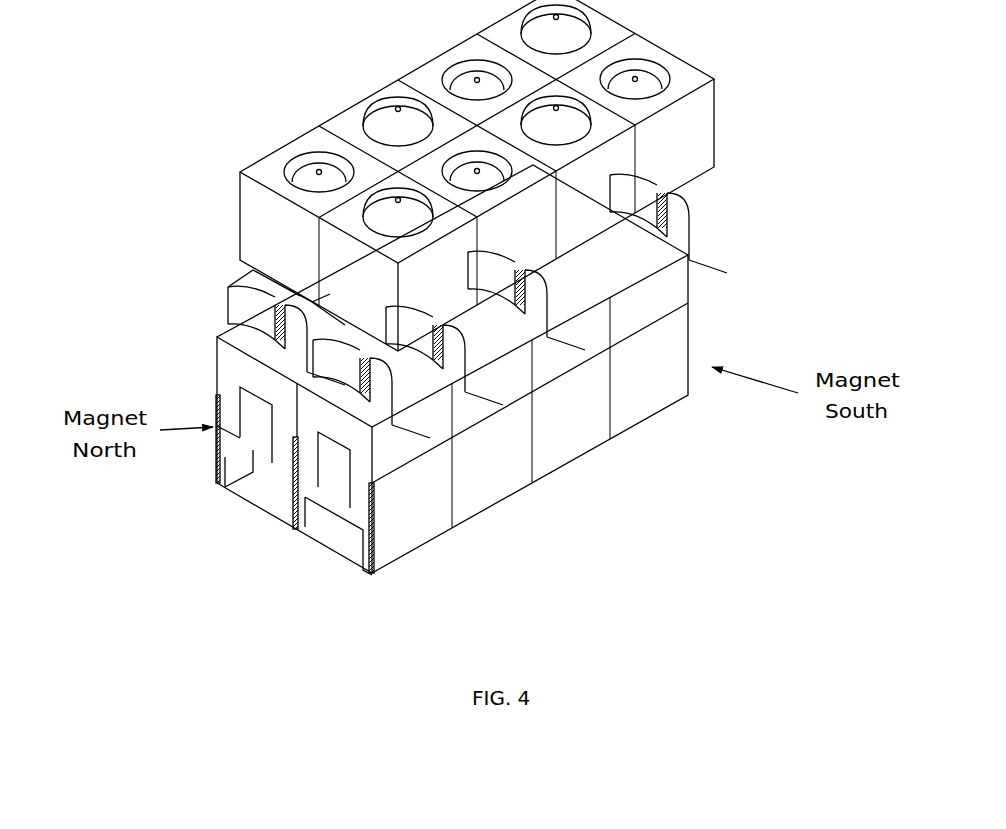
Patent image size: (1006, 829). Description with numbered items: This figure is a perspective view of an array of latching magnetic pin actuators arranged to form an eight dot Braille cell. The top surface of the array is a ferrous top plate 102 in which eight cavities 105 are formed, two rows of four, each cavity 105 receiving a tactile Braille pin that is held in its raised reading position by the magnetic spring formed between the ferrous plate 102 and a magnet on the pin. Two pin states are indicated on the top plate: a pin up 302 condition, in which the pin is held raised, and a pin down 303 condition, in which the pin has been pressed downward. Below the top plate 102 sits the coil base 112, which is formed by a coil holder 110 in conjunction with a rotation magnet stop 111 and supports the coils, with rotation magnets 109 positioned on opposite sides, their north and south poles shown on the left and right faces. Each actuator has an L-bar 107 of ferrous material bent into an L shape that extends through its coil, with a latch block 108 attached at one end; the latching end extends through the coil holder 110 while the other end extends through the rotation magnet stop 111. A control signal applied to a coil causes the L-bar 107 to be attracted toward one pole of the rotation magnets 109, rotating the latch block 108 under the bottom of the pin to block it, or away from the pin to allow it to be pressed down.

The ferrous plate 102 is at (280, 150).
The cavity 105 is at (255, 242).
The L-bar 107 is at (283, 304).
The latching block 108 is at (603, 257).
The rotation magnets 109 is at (573, 503).
The coil holder 110 is at (673, 285).
The rotation magnet stop 111 is at (307, 532).
The coil base 112 is at (235, 448).
The pin up 302 is at (605, 22).
The pin down 303 is at (675, 97).